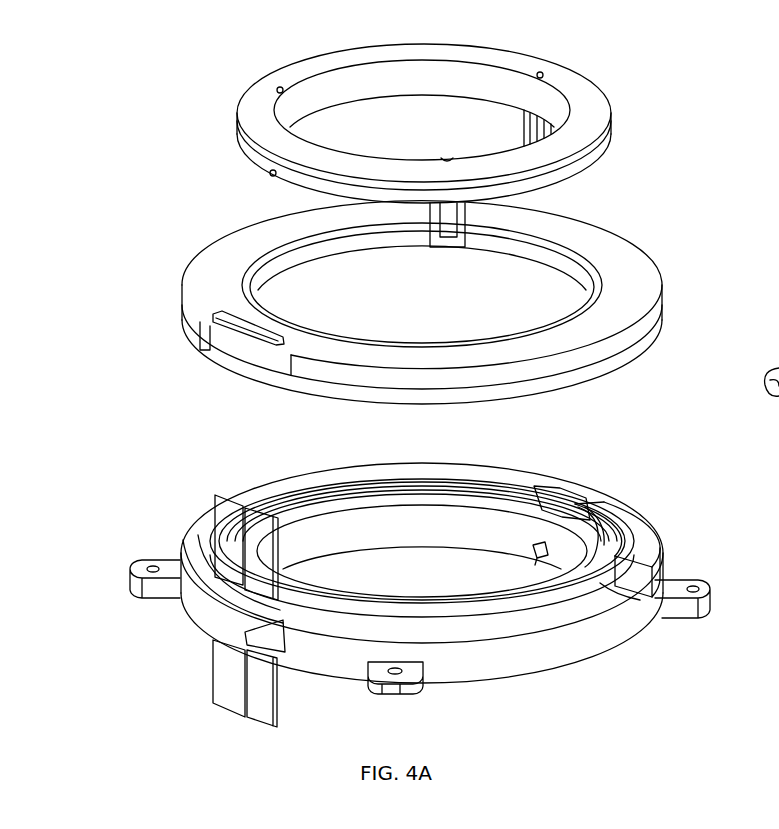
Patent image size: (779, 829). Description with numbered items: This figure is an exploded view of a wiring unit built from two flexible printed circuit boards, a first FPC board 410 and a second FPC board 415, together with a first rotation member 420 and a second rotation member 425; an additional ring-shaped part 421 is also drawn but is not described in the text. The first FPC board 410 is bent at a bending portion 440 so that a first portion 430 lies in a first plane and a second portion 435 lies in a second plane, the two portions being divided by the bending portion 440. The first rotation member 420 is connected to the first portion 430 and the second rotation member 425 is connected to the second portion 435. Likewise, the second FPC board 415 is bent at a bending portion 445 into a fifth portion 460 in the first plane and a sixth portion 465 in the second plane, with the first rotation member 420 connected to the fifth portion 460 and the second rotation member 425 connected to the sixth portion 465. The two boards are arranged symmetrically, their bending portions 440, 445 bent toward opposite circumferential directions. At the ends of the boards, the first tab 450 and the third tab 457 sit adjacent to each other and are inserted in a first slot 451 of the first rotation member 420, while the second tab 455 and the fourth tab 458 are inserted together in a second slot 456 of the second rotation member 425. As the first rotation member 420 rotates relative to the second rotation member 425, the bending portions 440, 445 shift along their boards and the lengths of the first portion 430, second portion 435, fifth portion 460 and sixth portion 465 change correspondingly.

The first FPC board 410 is at (290, 467).
The second FPC board 415 is at (655, 528).
The first rotation member 420 is at (437, 303).
The cover ring 421 is at (578, 163).
The second rotation member 425 is at (585, 648).
The first portion 430 is at (488, 478).
The second portion 435 is at (238, 612).
The bending portion 440 is at (557, 503).
The bending portion 445 is at (600, 500).
The first tab 450 is at (220, 523).
The first slot 451 is at (255, 330).
The second tab 455 is at (220, 683).
The second slot 456 is at (230, 633).
The third tab 457 is at (257, 550).
The fourth tab 458 is at (272, 708).
The fifth portion 460 is at (618, 528).
The sixth portion 465 is at (622, 590).